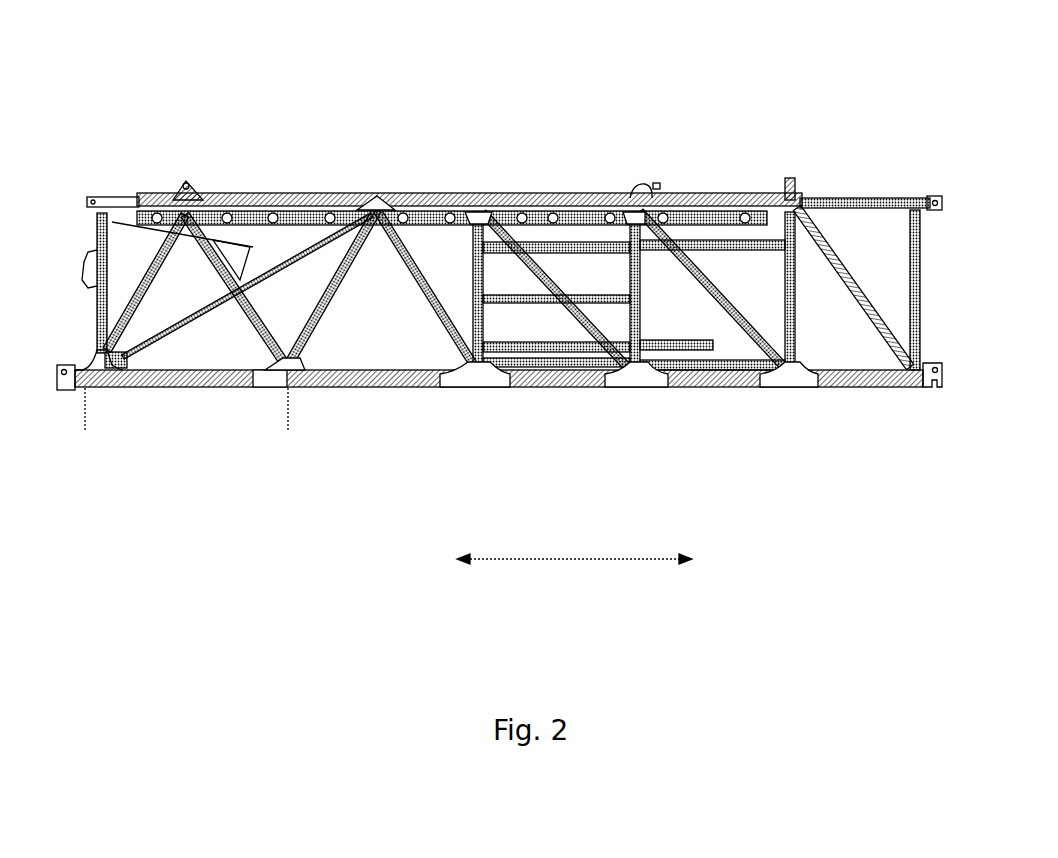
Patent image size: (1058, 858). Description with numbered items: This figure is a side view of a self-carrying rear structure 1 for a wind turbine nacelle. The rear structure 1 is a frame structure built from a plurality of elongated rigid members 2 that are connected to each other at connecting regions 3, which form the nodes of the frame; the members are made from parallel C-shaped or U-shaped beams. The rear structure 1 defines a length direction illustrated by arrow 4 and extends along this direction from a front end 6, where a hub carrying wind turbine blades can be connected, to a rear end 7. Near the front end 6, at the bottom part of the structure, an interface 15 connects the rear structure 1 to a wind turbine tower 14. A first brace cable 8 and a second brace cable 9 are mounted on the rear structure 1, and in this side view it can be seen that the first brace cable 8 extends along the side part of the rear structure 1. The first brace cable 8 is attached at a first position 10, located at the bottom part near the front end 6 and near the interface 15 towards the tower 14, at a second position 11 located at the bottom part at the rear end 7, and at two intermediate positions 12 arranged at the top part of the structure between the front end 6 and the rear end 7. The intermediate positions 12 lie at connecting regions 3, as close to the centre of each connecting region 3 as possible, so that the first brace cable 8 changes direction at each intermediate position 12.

The rear structure 1 is at (187, 65).
The elongated rigid member 2 is at (718, 297).
The connecting region 3 is at (492, 212).
The arrow 4 is at (575, 559).
The front end 6 is at (72, 273).
The rear end 7 is at (941, 273).
The first brace cable 8 is at (193, 388).
The second brace cable 9 is at (250, 247).
The first position 10 is at (122, 383).
The second position 11 is at (911, 388).
The intermediate position 12 is at (373, 197).
The wind turbine tower 14 is at (258, 417).
The interface 15 is at (208, 383).